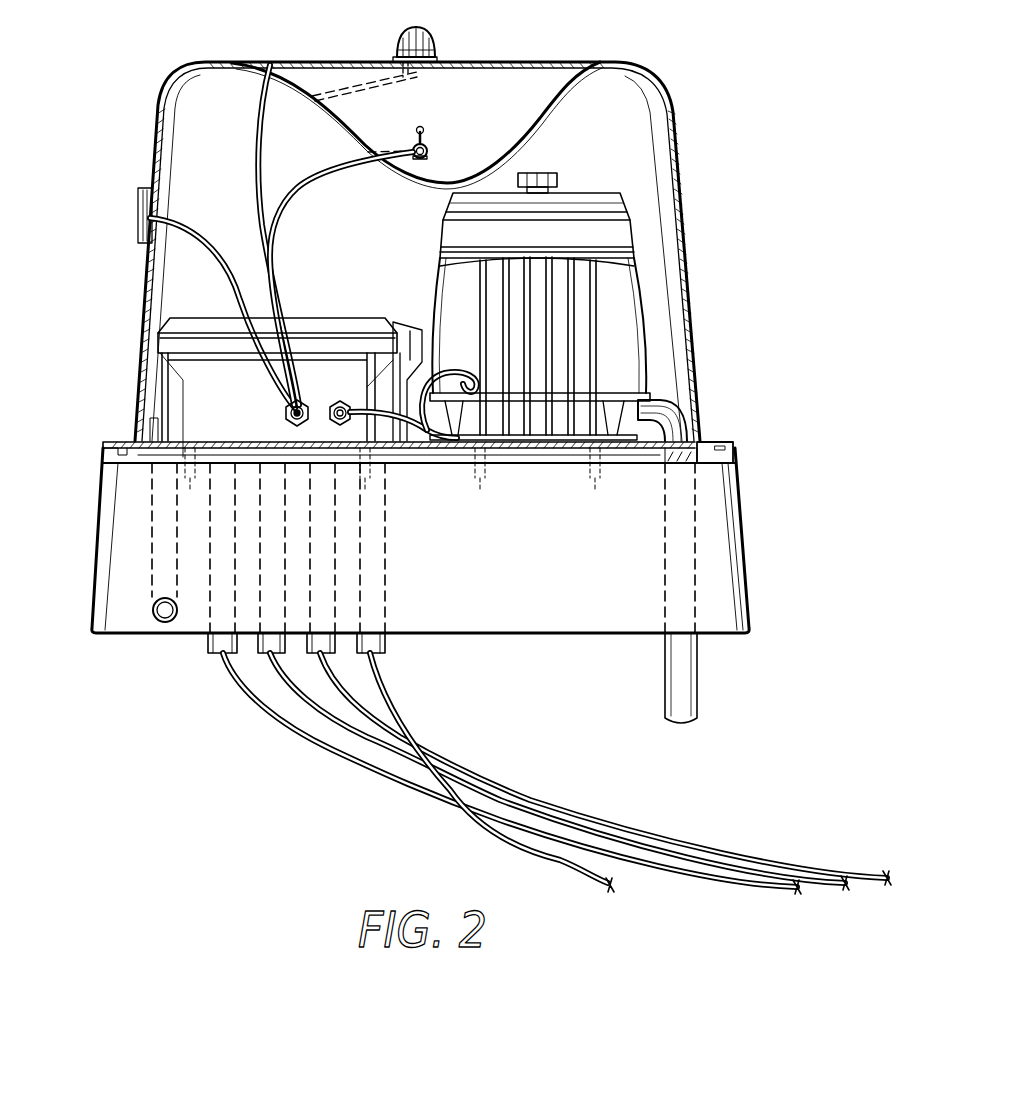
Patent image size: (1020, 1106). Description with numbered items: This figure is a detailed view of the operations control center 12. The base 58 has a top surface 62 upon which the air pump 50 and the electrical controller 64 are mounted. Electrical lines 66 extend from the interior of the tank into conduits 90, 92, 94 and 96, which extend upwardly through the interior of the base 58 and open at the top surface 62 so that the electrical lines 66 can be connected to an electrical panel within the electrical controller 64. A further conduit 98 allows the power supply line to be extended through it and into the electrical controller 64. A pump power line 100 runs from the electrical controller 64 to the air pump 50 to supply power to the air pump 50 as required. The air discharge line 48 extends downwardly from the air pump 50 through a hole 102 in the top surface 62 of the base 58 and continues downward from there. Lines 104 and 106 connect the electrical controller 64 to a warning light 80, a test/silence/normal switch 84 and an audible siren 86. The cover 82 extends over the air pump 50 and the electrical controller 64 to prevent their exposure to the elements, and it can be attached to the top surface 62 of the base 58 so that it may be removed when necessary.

The operations control center 12 is at (702, 175).
The air discharge line 48 is at (685, 527).
The air pump 50 is at (623, 310).
The base 58 is at (745, 567).
The top surface 62 is at (708, 440).
The electrical controller 64 is at (202, 395).
The electrical lines 66 is at (523, 820).
The warning light 80 is at (435, 33).
The cover 82 is at (677, 115).
The test/silence/normal switch 84 is at (427, 140).
The audible siren 86 is at (143, 207).
The conduit 90 is at (222, 645).
The conduit 92 is at (268, 650).
The conduit 94 is at (323, 600).
The conduit 96 is at (370, 552).
The conduit 98 is at (158, 577).
The pump power line 100 is at (422, 462).
The hole 102 is at (695, 395).
The line 104 is at (273, 263).
The line 106 is at (175, 223).